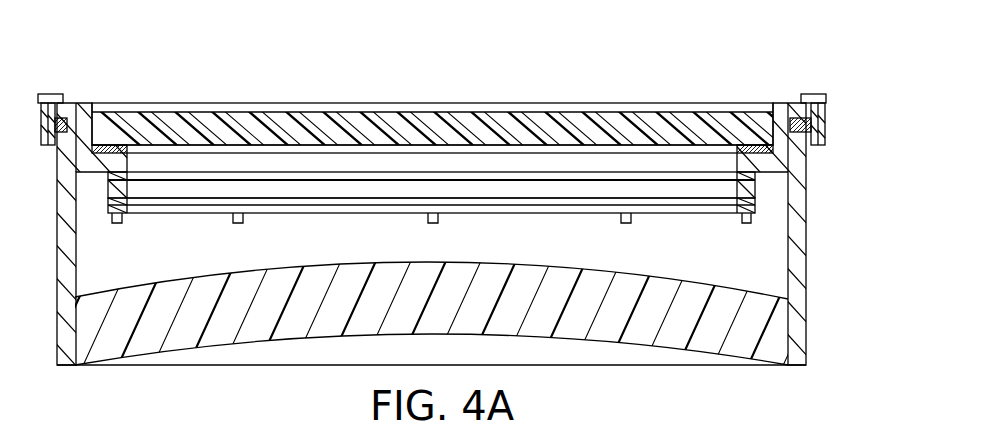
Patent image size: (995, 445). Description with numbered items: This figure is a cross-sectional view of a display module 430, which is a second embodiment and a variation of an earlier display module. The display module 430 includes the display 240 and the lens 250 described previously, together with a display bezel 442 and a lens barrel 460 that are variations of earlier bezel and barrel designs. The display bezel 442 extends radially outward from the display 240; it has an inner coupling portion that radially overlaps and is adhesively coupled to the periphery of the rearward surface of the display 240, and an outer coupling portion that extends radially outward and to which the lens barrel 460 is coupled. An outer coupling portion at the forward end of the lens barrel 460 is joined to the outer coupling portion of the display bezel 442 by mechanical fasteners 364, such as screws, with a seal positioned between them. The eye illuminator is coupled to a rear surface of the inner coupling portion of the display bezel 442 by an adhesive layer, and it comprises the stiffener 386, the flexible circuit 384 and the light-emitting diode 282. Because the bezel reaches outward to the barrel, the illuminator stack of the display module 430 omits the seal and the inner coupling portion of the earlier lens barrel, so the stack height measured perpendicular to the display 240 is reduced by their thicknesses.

The display module 430 is at (775, 72).
The display 240 is at (642, 108).
The mechanical fasteners 364 is at (52, 94).
The display bezel 442 is at (805, 130).
The stiffener 386 is at (755, 182).
The flexible circuit 384 is at (755, 212).
The light-emitting diode 282 is at (752, 220).
The lens 250 is at (760, 297).
The lens barrel 460 is at (806, 326).